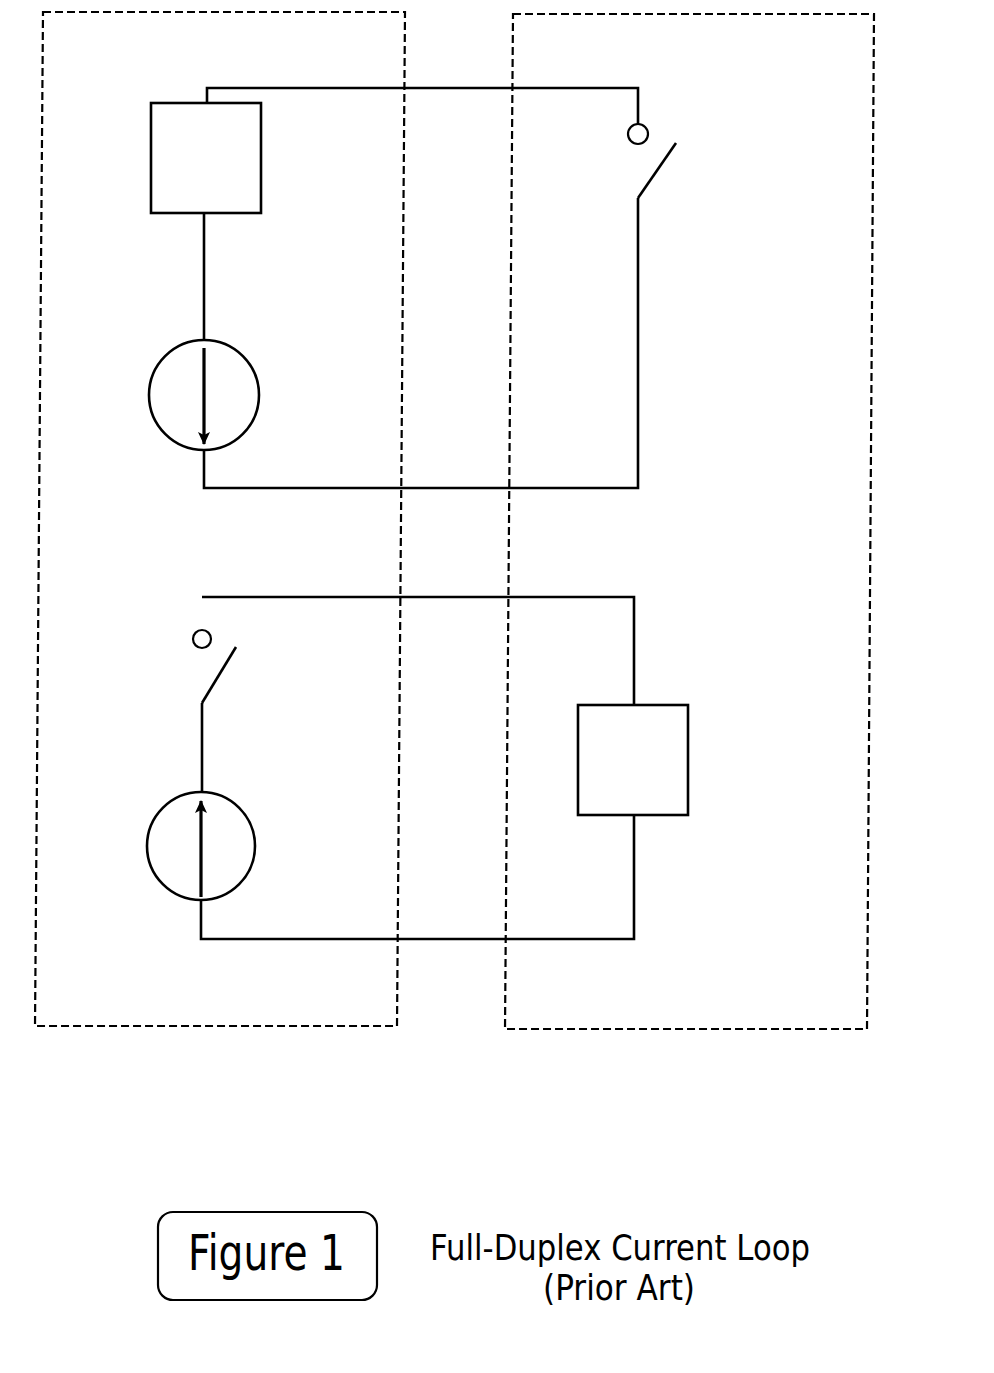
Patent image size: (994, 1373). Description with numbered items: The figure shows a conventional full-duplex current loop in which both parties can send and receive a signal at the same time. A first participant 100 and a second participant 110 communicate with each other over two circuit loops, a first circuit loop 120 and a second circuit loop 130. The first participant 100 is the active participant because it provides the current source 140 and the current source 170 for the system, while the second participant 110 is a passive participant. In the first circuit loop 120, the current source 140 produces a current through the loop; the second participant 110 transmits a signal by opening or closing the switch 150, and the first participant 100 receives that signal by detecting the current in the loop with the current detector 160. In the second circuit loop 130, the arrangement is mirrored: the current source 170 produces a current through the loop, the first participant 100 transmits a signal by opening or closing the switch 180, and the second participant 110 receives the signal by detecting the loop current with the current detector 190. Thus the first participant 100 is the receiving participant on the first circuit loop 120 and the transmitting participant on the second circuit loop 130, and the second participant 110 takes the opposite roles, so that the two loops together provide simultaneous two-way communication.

The first participant 100 is at (198, 1031).
The second participant 110 is at (685, 1033).
The first circuit loop 120 is at (643, 419).
The second circuit loop 130 is at (641, 667).
The current source 140 is at (149, 395).
The switch 150 is at (629, 160).
The current detector 160 is at (172, 100).
The current source 170 is at (148, 848).
The switch 180 is at (179, 667).
The current detector 190 is at (691, 752).